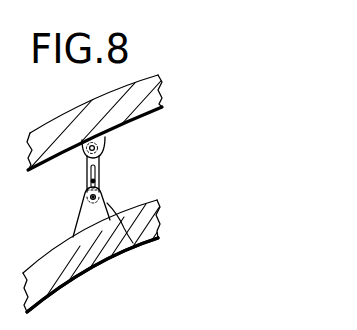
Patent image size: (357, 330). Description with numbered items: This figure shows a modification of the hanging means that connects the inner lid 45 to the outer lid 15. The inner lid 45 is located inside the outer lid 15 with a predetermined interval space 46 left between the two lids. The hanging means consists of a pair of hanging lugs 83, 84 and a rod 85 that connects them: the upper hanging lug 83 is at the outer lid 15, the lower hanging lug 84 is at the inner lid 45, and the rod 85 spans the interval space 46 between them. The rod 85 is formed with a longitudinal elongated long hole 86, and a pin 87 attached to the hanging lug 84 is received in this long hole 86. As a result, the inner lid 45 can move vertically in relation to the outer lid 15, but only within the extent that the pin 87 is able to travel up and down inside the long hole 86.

The outer lid 15 is at (88, 120).
The inner lid 45 is at (83, 263).
The interval space 46 is at (67, 182).
The hanging lug 83 is at (108, 137).
The hanging lug 84 is at (97, 217).
The rod 85 is at (97, 162).
The long hole 86 is at (97, 183).
The pin 87 is at (97, 275).